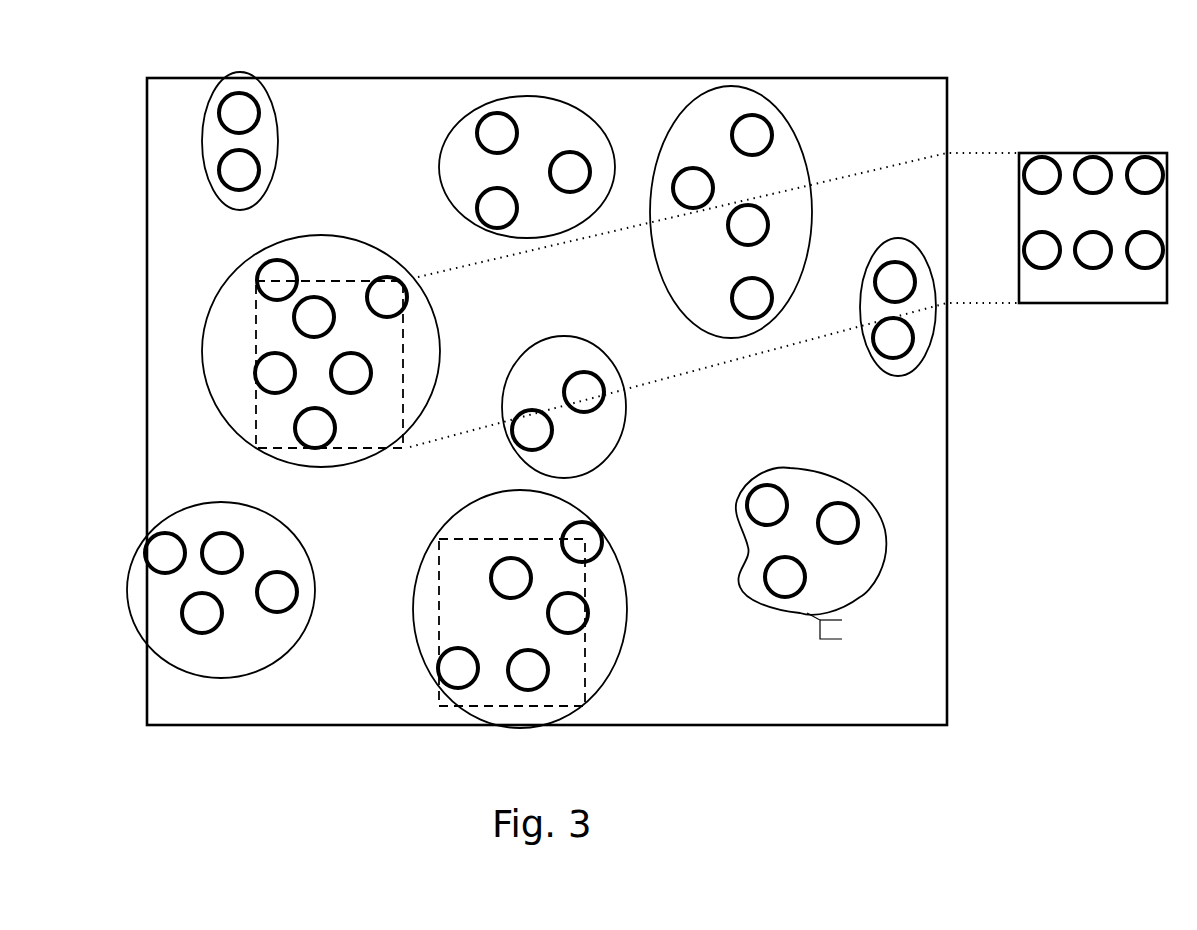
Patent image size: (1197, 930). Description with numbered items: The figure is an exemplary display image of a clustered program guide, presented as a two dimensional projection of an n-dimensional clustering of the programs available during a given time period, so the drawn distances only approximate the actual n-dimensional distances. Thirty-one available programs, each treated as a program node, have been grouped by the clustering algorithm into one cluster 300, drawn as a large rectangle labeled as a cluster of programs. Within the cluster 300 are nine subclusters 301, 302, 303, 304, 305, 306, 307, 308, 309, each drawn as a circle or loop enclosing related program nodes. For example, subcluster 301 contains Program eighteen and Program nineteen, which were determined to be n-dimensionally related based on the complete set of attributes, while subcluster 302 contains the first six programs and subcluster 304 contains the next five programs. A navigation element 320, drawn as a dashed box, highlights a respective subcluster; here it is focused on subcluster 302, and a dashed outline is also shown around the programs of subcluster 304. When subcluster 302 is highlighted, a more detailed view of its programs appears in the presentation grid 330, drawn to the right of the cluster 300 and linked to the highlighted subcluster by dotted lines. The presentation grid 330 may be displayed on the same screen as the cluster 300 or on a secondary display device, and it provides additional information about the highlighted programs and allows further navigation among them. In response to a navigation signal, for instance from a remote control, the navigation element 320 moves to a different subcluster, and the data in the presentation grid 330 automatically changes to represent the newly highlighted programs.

The cluster 300 is at (146, 260).
The subcluster 301 is at (233, 196).
The subcluster 302 is at (439, 324).
The subcluster 303 is at (303, 549).
The subcluster 304 is at (614, 642).
The subcluster 305 is at (628, 416).
The subcluster 306 is at (452, 132).
The subcluster 307 is at (803, 147).
The subcluster 308 is at (938, 341).
The subcluster 309 is at (875, 490).
The navigation element 320 is at (251, 400).
The presentation grid 330 is at (1147, 307).